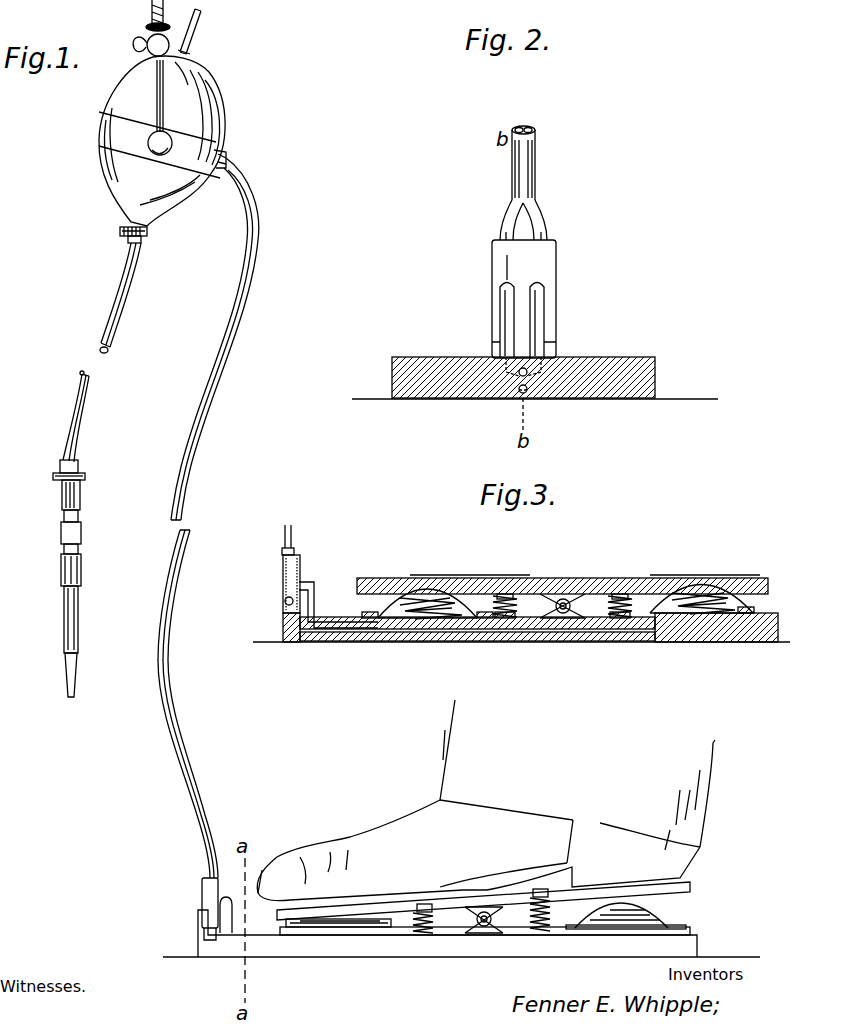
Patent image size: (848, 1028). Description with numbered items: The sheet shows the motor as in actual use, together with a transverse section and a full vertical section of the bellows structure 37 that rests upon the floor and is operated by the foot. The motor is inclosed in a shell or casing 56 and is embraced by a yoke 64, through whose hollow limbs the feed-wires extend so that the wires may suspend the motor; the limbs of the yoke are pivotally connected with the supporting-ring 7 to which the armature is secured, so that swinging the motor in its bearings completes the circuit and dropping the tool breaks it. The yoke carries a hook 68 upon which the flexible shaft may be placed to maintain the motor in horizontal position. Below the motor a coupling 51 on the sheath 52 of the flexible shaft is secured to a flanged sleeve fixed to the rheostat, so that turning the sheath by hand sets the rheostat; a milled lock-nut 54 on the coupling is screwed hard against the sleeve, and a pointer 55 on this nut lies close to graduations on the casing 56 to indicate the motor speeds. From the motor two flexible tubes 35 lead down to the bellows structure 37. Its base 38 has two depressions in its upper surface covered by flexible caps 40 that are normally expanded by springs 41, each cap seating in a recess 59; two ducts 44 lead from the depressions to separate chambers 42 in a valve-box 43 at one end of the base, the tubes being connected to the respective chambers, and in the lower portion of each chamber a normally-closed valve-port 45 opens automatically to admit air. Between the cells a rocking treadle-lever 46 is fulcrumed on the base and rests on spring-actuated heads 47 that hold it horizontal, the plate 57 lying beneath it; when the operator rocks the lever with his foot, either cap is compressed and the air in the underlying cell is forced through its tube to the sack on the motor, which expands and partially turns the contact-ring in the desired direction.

In FIG. 1, the supporting-ring 7 is at (99, 125).
In FIG. 1, the flexible tube 35 is at (258, 236).
In FIG. 2, the flexible tube 35 is at (536, 178).
In FIG. 1, the bellows structure 37 is at (485, 953).
In FIG. 1, the base 38 is at (461, 933).
In FIG. 2, the base 38 is at (656, 373).
In FIG. 3, the base 38 is at (765, 636).
In FIG. 1, the flexible cap 40 is at (359, 927).
In FIG. 3, the flexible cap 40 is at (382, 606).
In FIG. 3, the spring 41 is at (428, 618).
In FIG. 3, the chamber 42 is at (291, 579).
In FIG. 1, the valve-box 43 is at (202, 893).
In FIG. 3, the valve-box 43 is at (296, 562).
In FIG. 2, the duct 44 is at (533, 392).
In FIG. 3, the duct 44 is at (329, 632).
In FIG. 2, the valve-port 45 is at (557, 256).
In FIG. 3, the valve-port 45 is at (292, 613).
In FIG. 1, the rocking treadle-lever 46 is at (690, 884).
In FIG. 3, the rocking treadle-lever 46 is at (592, 578).
In FIG. 1, the spring-actuated head 47 is at (562, 912).
In FIG. 3, the spring-actuated head 47 is at (508, 592).
In FIG. 1, the coupling 51 is at (141, 244).
In FIG. 1, the sheath 52 is at (117, 331).
In FIG. 1, the milled lock-nut 54 is at (147, 232).
In FIG. 1, the pointer 55 is at (84, 374).
In FIG. 1, the shell or casing 56 is at (219, 130).
In FIG. 3, the shell or casing 56 is at (410, 598).
In FIG. 3, the plate 57 is at (477, 641).
In FIG. 3, the recess 59 is at (386, 623).
In FIG. 1, the yoke 64 is at (163, 112).
In FIG. 1, the hook 68 is at (146, 44).